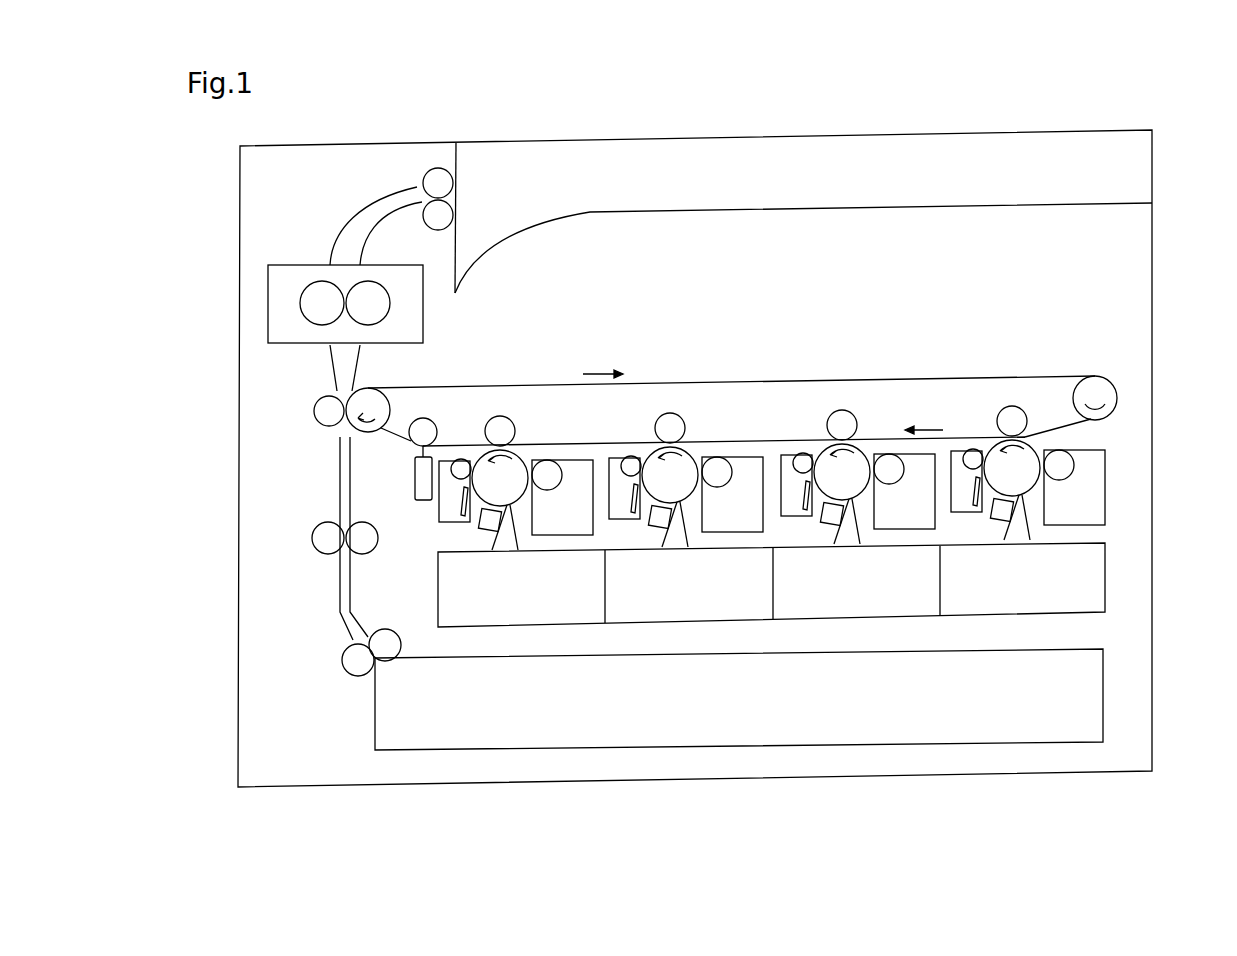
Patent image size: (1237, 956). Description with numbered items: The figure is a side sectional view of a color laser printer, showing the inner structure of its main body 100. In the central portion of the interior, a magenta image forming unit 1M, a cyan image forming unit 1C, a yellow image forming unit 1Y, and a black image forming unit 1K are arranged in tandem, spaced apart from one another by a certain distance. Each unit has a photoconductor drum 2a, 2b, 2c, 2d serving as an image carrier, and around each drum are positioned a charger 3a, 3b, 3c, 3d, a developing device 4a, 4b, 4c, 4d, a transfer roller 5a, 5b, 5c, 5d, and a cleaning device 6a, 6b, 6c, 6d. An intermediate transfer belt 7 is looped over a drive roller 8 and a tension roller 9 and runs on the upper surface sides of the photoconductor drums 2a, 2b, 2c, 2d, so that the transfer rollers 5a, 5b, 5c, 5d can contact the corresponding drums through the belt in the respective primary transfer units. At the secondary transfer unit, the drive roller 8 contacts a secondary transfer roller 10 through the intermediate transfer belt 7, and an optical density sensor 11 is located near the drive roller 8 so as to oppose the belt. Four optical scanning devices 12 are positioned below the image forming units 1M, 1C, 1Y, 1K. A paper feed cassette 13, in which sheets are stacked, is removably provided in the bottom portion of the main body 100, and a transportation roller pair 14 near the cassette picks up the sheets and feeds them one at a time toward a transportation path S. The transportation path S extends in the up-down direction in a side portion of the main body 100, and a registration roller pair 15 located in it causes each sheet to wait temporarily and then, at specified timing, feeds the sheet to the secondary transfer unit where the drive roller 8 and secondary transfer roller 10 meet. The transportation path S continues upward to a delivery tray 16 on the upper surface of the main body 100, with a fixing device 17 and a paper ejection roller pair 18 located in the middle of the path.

The main body 100 is at (1156, 614).
The black image forming unit 1K is at (493, 490).
The yellow image forming unit 1Y is at (684, 490).
The cyan image forming unit 1C is at (856, 492).
The magenta image forming unit 1M is at (1040, 488).
The photoconductor drum 2a is at (1014, 440).
The photoconductor drum 2b is at (843, 443).
The photoconductor drum 2c is at (721, 449).
The photoconductor drum 2d is at (556, 453).
The charger 3a is at (1002, 538).
The charger 3b is at (834, 541).
The charger 3c is at (661, 547).
The charger 3d is at (492, 548).
The developing device 4a is at (1091, 511).
The developing device 4b is at (908, 516).
The developing device 4c is at (735, 519).
The developing device 4d is at (562, 524).
The transfer roller 5a is at (1028, 410).
The transfer roller 5b is at (866, 416).
The transfer roller 5c is at (687, 414).
The transfer roller 5d is at (517, 418).
The cleaning device 6a is at (962, 498).
The cleaning device 6b is at (791, 502).
The cleaning device 6c is at (620, 504).
The cleaning device 6d is at (433, 502).
The intermediate transfer belt 7 is at (904, 378).
The drive roller 8 is at (392, 406).
The tension roller 9 is at (1101, 386).
The secondary transfer roller 10 is at (316, 415).
The optical density sensor 11 is at (415, 494).
The optical scanning device 12 is at (493, 627).
The paper feed cassette 13 is at (855, 747).
The transportation roller pair 14 is at (387, 647).
The registration roller pair 15 is at (362, 540).
The delivery tray 16 is at (641, 212).
The fixing device 17 is at (306, 265).
The paper ejection roller pair 18 is at (432, 212).
The transportation path S is at (340, 494).